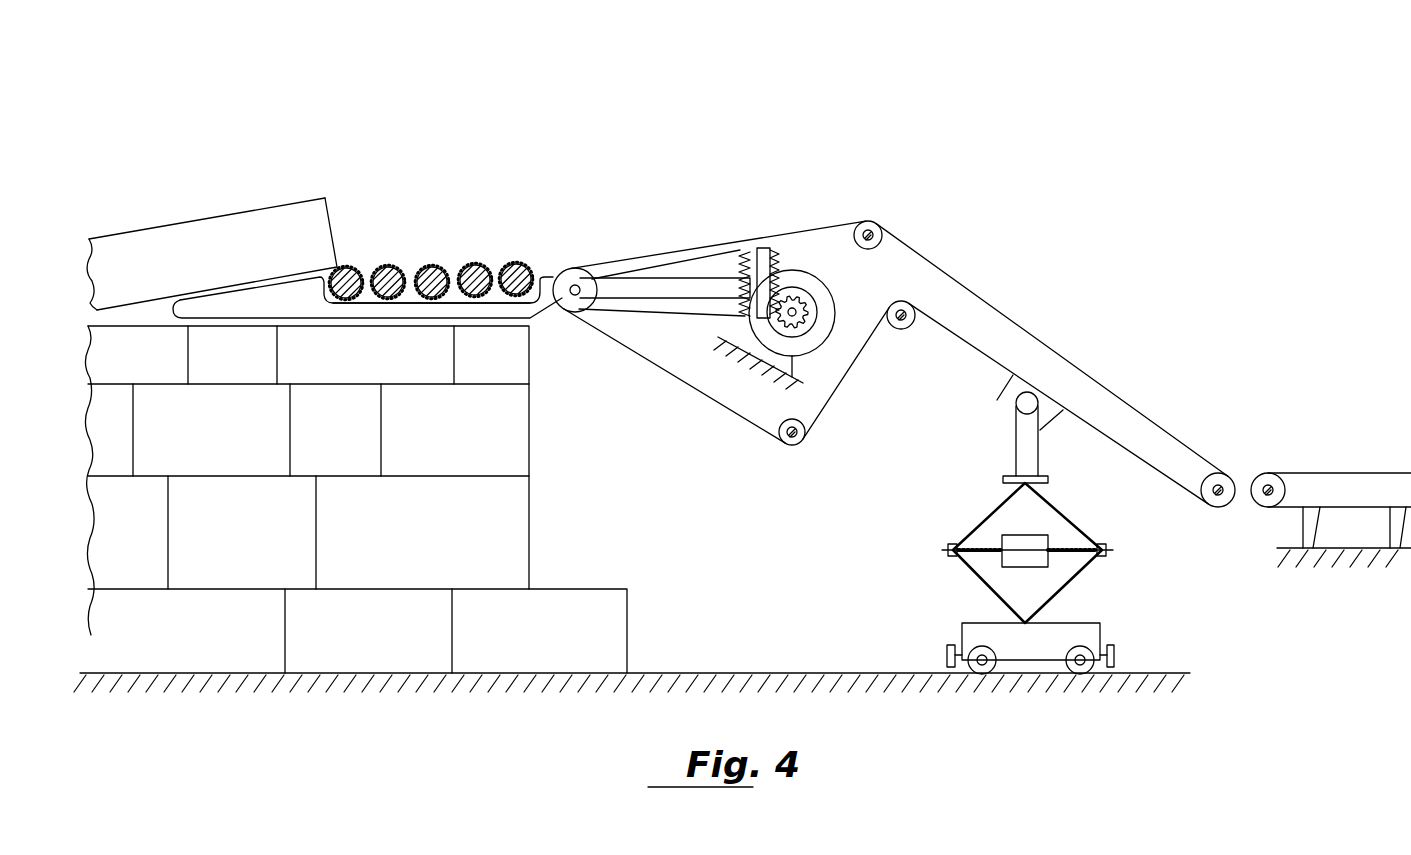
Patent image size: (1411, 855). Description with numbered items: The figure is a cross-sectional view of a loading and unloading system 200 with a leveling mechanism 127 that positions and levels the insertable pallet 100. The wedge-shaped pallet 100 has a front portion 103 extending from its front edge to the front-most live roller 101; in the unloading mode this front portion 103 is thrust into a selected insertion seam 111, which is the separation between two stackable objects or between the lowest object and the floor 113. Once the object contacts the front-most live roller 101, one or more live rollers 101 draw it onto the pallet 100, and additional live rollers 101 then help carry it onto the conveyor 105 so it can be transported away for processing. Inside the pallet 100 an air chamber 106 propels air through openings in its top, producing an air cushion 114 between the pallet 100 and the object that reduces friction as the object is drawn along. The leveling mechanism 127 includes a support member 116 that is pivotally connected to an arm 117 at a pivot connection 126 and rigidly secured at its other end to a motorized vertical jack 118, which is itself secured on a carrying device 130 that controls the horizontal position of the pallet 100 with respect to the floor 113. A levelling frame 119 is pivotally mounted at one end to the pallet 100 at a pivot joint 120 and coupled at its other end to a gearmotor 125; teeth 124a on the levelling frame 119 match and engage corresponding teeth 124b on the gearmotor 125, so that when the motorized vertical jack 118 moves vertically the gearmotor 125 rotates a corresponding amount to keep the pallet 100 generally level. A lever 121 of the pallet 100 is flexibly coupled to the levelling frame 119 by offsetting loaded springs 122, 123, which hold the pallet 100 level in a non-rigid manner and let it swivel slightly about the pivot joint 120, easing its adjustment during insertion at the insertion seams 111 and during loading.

The insertable pallet 100 is at (426, 236).
The live roller 101 is at (352, 268).
The front portion 103 is at (311, 324).
The conveyor 105 is at (1040, 333).
The air chamber 106 is at (398, 312).
The insertion seam 111 is at (529, 385).
The floor 113 is at (770, 672).
The air cushion 114 is at (287, 290).
The support member 116 is at (1035, 445).
The arm 117 is at (1063, 383).
The motorized vertical jack 118 is at (1067, 515).
The levelling frame 119 is at (710, 250).
The pivot joint 120 is at (573, 312).
The lever 121 is at (637, 277).
The loaded spring 122 is at (755, 247).
The loaded spring 123 is at (738, 308).
The teeth 124a is at (780, 255).
The teeth 124b is at (803, 310).
The gearmotor 125 is at (818, 331).
The pivot connection 126 is at (1022, 403).
The leveling mechanism 127 is at (673, 242).
The carrying device 130 is at (1082, 633).
The loading and unloading system 200 is at (1031, 225).